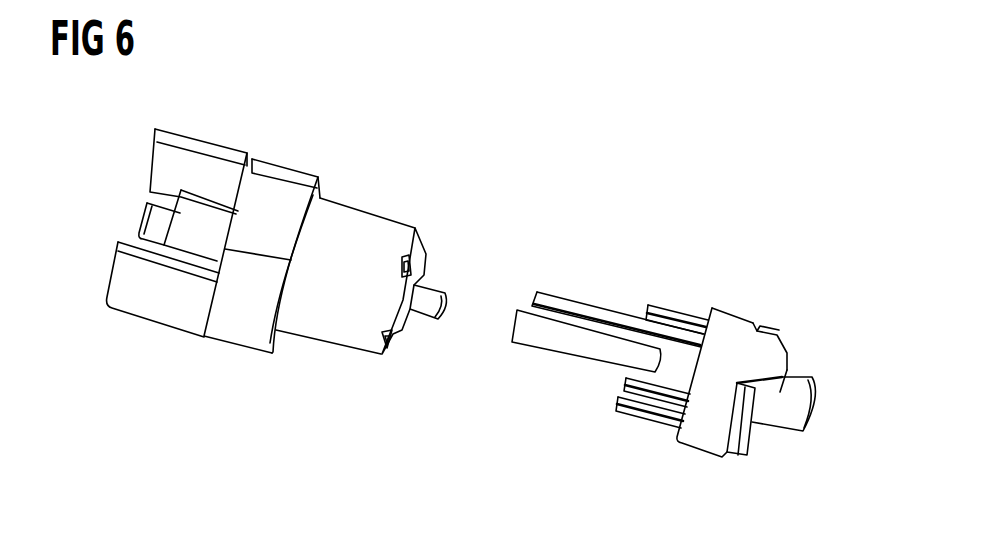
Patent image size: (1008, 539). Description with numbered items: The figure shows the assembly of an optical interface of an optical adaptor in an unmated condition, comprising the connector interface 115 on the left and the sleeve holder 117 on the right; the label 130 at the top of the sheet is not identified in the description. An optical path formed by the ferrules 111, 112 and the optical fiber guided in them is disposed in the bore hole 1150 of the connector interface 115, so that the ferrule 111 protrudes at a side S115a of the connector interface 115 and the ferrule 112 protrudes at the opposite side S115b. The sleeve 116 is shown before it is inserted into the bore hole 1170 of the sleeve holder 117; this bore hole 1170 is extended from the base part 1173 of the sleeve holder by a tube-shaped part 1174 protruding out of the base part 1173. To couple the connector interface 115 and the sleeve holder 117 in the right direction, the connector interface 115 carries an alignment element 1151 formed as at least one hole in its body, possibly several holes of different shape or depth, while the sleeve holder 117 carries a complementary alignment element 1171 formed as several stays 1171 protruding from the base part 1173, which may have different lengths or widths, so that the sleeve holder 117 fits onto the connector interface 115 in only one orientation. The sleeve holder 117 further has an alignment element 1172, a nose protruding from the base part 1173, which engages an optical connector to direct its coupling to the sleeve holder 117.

The drive assembly 130 is at (834, 1).
The connector interface 115 is at (364, 160).
The side of the connector interface S115a is at (418, 241).
The side of the connector interface S115b is at (151, 173).
The ferrule 112 is at (139, 219).
The ferrule 111 is at (427, 308).
The bore hole 1150 is at (423, 277).
The alignment element 1151 is at (387, 350).
The sleeve holder 117 is at (728, 290).
The alignment element 1171 is at (585, 306).
The sleeve 116 is at (553, 341).
The alignment element 1172 is at (781, 356).
The base part 1173 is at (699, 432).
The tube-shaped part 1174 is at (782, 416).
The bore hole 1170 is at (814, 410).